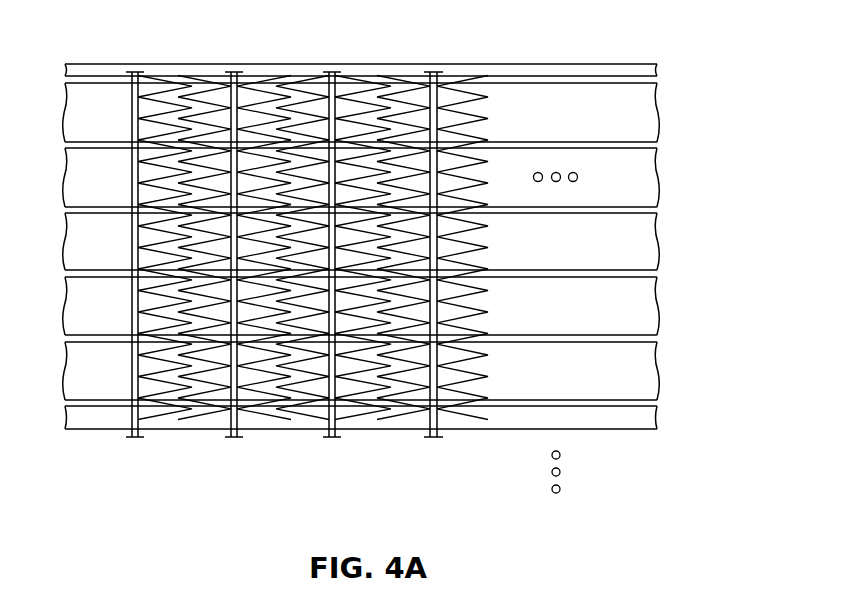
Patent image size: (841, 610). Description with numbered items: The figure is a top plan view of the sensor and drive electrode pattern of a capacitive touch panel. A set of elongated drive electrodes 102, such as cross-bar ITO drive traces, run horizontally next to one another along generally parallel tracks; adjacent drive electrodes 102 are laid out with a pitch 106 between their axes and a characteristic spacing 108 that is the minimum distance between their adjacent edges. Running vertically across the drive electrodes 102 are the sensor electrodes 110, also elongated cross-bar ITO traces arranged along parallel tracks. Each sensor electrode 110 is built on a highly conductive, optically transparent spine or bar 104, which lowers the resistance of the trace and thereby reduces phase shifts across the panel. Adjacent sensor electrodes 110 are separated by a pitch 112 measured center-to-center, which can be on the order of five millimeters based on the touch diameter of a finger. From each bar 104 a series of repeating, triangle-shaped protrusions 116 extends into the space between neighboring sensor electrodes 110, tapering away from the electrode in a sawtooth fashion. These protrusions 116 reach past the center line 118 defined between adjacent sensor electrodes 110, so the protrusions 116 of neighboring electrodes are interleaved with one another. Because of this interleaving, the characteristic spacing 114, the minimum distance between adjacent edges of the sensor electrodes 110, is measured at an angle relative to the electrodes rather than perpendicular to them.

The drive electrodes 102 is at (643, 118).
The spines/bars 104 is at (434, 393).
The pitch 106 is at (663, 242).
The characteristic spacing 108 is at (677, 437).
The sensor electrodes 110 is at (458, 93).
The pitch 112 is at (136, 445).
The characteristic spacing 114 is at (298, 388).
The fins/protrusions 116 is at (403, 413).
The center line 118 is at (187, 440).